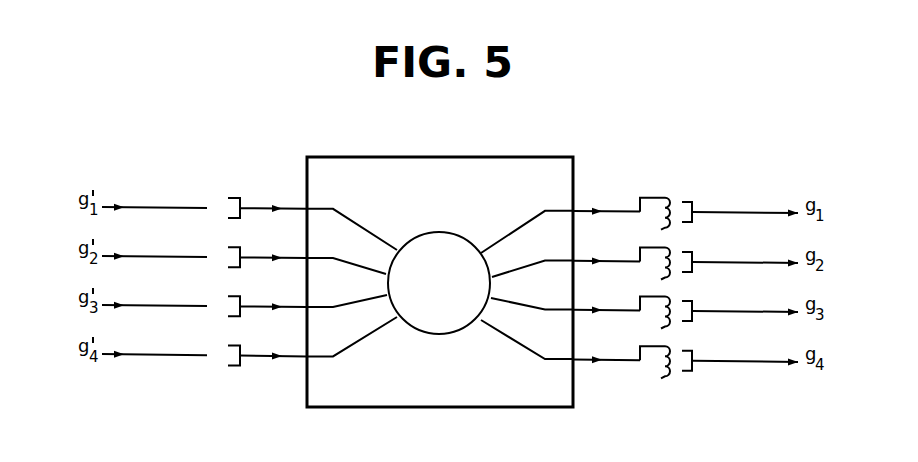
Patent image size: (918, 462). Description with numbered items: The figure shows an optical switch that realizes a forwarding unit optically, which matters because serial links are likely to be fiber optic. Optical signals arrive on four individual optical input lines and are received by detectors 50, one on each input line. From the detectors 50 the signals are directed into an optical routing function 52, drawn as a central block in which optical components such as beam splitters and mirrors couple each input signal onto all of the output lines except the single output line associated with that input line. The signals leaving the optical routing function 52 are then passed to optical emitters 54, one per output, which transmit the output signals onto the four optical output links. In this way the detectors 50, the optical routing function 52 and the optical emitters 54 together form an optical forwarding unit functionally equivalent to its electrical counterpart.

The detectors 50 is at (231, 196).
The optical routing function 52 is at (332, 156).
The optical emitters 54 is at (666, 196).